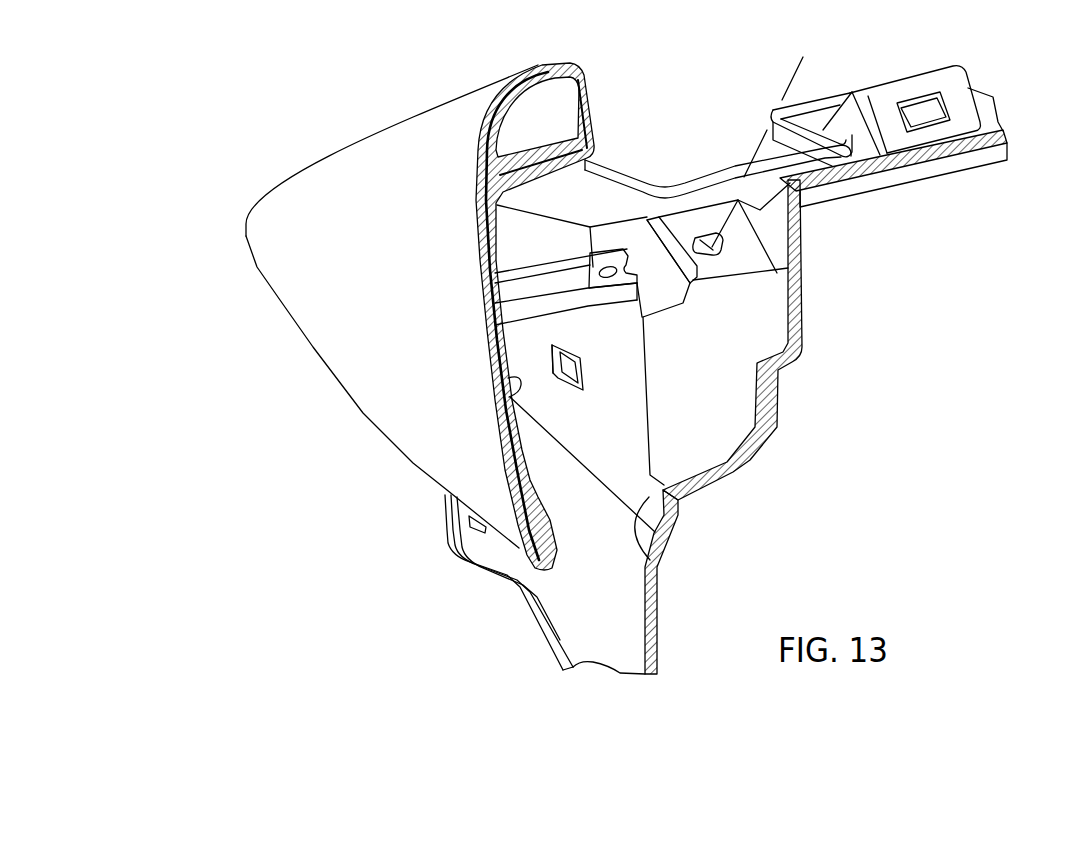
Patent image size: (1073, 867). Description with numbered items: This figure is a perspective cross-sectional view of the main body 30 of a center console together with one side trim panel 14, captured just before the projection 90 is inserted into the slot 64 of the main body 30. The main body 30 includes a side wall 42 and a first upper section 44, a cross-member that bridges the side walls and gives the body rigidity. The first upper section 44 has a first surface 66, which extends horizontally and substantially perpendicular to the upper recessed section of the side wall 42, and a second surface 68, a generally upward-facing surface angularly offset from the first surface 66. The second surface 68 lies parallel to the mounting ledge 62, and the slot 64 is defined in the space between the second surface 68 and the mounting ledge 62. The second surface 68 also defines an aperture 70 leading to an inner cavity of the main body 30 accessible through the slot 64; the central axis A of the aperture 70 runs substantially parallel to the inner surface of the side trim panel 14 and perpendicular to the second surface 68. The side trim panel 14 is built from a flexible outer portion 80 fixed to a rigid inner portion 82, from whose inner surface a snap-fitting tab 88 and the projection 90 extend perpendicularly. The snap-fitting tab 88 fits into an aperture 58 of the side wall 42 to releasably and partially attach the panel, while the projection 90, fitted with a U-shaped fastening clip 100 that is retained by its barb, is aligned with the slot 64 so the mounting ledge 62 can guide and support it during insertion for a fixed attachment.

The side trim panel 14 is at (340, 151).
The main body 30 is at (779, 402).
The side wall 42 is at (658, 557).
The first upper section 44 is at (806, 118).
The aperture 58 is at (563, 357).
The mounting ledge 62 is at (653, 303).
The slot 64 is at (673, 290).
The first surface 66 is at (612, 198).
The second surface 68 is at (752, 257).
The aperture 70 is at (722, 247).
The flexible outer portion 80 is at (485, 357).
The rigid inner portion 82 is at (522, 443).
The snap-fitting tab 88 is at (515, 380).
The projection 90 is at (510, 283).
The fastening clip 100 is at (590, 262).
The central axis A is at (791, 80).